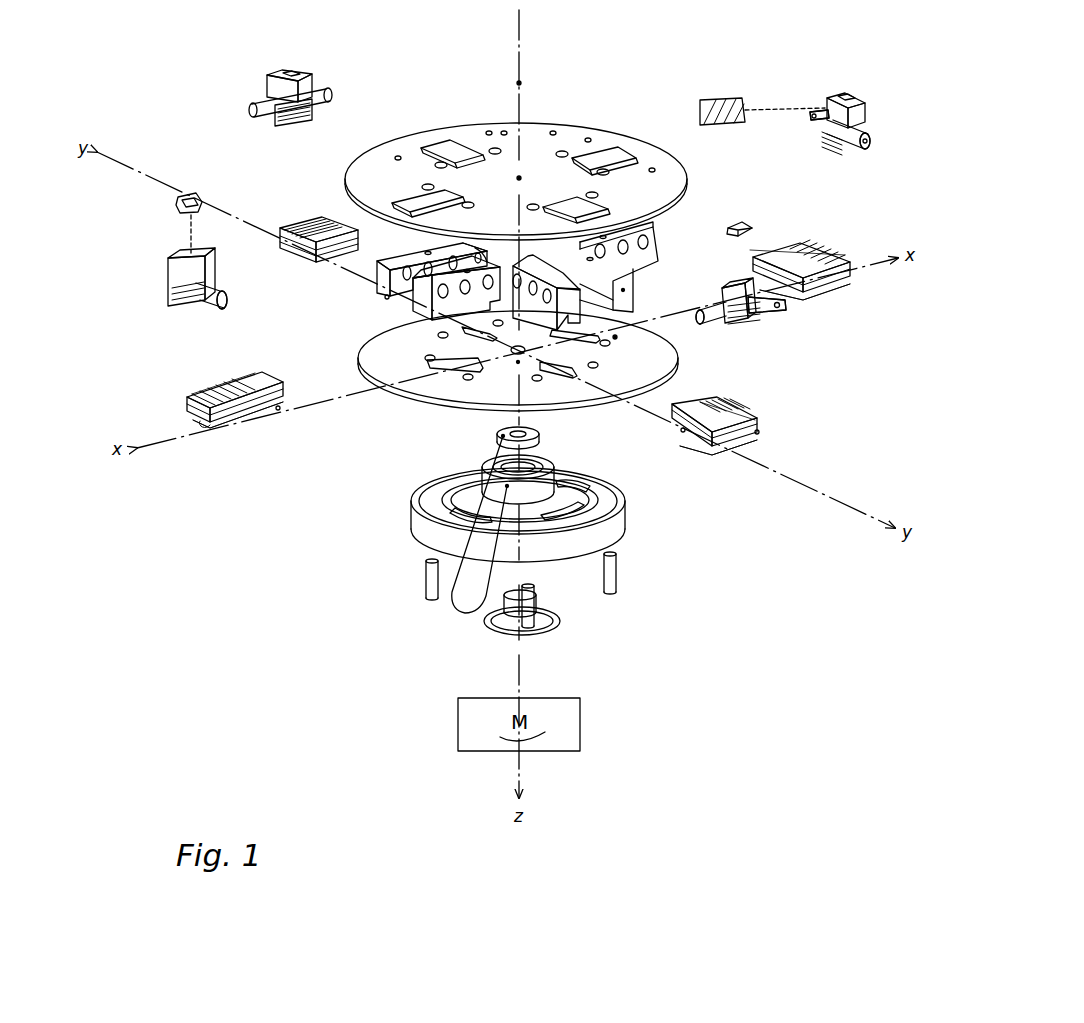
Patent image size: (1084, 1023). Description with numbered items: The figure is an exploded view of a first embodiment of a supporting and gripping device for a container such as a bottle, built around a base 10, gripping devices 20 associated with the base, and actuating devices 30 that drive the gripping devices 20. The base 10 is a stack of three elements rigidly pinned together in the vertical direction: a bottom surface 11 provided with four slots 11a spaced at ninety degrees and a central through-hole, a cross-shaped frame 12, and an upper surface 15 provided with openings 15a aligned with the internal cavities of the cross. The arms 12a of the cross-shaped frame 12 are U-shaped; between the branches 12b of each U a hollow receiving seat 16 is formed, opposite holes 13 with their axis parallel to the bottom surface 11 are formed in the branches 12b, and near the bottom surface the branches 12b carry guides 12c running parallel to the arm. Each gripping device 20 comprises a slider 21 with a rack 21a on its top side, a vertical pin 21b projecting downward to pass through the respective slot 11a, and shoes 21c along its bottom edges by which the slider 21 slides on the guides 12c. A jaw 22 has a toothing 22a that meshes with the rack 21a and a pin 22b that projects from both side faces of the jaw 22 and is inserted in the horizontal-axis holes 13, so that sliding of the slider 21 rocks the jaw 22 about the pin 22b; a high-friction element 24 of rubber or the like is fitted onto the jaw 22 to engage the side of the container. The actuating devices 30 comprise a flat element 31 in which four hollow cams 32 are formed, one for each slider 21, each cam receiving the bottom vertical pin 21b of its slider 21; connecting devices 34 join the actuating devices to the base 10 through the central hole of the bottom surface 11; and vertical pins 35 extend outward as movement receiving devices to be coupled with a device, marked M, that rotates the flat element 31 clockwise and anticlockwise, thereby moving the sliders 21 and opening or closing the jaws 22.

The base 10 is at (363, 397).
The bottom surface 11 is at (503, 387).
The slots 11a is at (447, 360).
The cross-shaped frame 12 is at (416, 318).
The arms 12a is at (648, 258).
The branches 12b is at (383, 277).
The guides 12c is at (395, 312).
The holes 13 is at (387, 297).
The upper surface 15 is at (553, 135).
The openings 15a is at (458, 148).
The hollow receiving seat 16 is at (615, 337).
The gripping devices 20 is at (190, 362).
The slider 21 is at (246, 380).
The rack 21a is at (235, 390).
The vertical pin 21b is at (238, 422).
The shoes 21c is at (278, 408).
The jaw 22 is at (862, 112).
The toothing 22a is at (822, 132).
The pin 22b is at (812, 115).
The high-friction element 24 is at (176, 205).
The actuating devices 30 is at (307, 588).
The flat element 31 is at (632, 548).
The hollow cams 32 is at (500, 483).
The connecting devices 34 is at (470, 612).
The vertical pins 35 is at (430, 578).